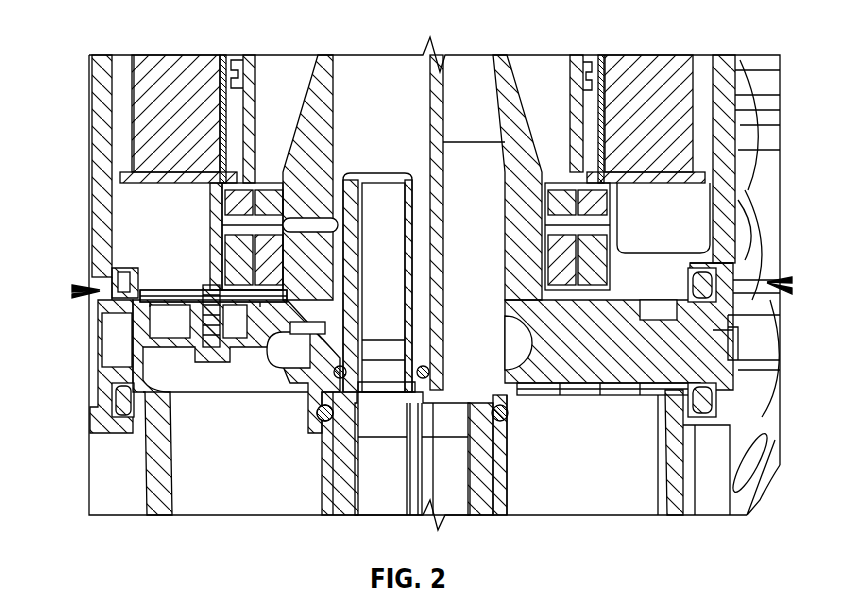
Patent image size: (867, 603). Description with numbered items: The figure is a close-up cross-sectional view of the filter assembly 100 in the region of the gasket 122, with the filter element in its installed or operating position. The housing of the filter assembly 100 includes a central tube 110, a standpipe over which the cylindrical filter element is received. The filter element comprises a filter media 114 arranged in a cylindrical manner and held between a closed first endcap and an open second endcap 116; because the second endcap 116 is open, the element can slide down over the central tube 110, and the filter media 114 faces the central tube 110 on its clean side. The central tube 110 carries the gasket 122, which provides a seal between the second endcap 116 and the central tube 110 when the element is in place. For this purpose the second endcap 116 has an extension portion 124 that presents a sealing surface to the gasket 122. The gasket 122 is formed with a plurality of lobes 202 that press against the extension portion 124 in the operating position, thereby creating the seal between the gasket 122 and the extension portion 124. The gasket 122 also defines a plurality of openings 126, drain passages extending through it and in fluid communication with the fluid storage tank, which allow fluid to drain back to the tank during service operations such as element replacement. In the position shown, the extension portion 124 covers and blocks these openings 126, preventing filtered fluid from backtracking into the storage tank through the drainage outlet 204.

The filter assembly 100 is at (114, 45).
The central tube 110 is at (244, 62).
The filter media 114 is at (628, 60).
The second endcap 116 is at (650, 185).
The gasket 122 is at (600, 200).
The extension portion 124 is at (615, 230).
The openings 126 is at (233, 228).
The lobes 202 is at (222, 185).
The drainage outlet 204 is at (297, 226).